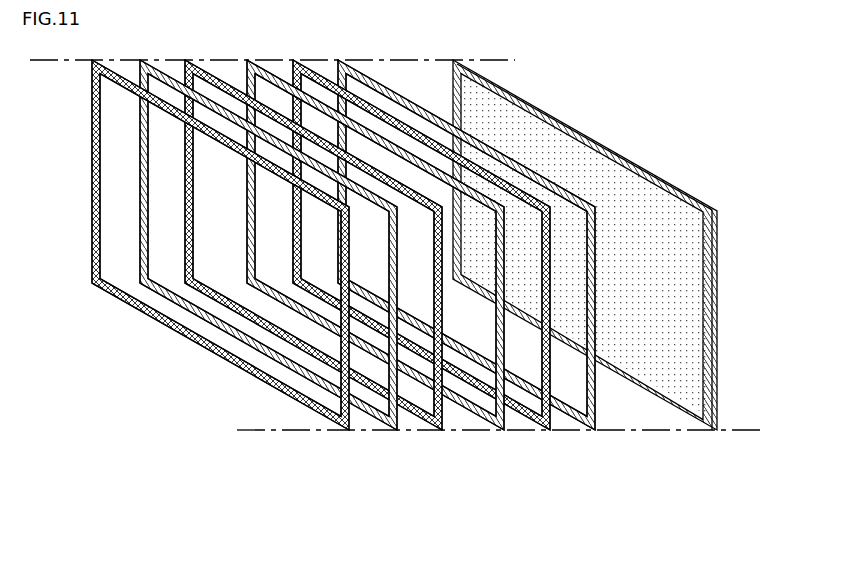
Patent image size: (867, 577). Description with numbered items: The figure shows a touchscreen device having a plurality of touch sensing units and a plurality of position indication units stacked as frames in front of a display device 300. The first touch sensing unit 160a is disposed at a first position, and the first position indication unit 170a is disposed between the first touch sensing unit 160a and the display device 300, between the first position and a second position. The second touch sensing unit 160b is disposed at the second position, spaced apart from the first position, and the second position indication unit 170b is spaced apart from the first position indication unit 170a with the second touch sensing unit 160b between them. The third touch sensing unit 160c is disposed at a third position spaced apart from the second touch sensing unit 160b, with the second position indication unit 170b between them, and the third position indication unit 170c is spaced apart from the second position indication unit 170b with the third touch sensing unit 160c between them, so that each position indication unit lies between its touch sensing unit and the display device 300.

The first touch sensing unit 160a is at (323, 418).
The first position indication unit 170a is at (379, 423).
The second touch sensing unit 160b is at (428, 430).
The second position indication unit 170b is at (490, 418).
The third touch sensing unit 160c is at (538, 430).
The third position indication unit 170c is at (585, 432).
The display device 300 is at (713, 430).